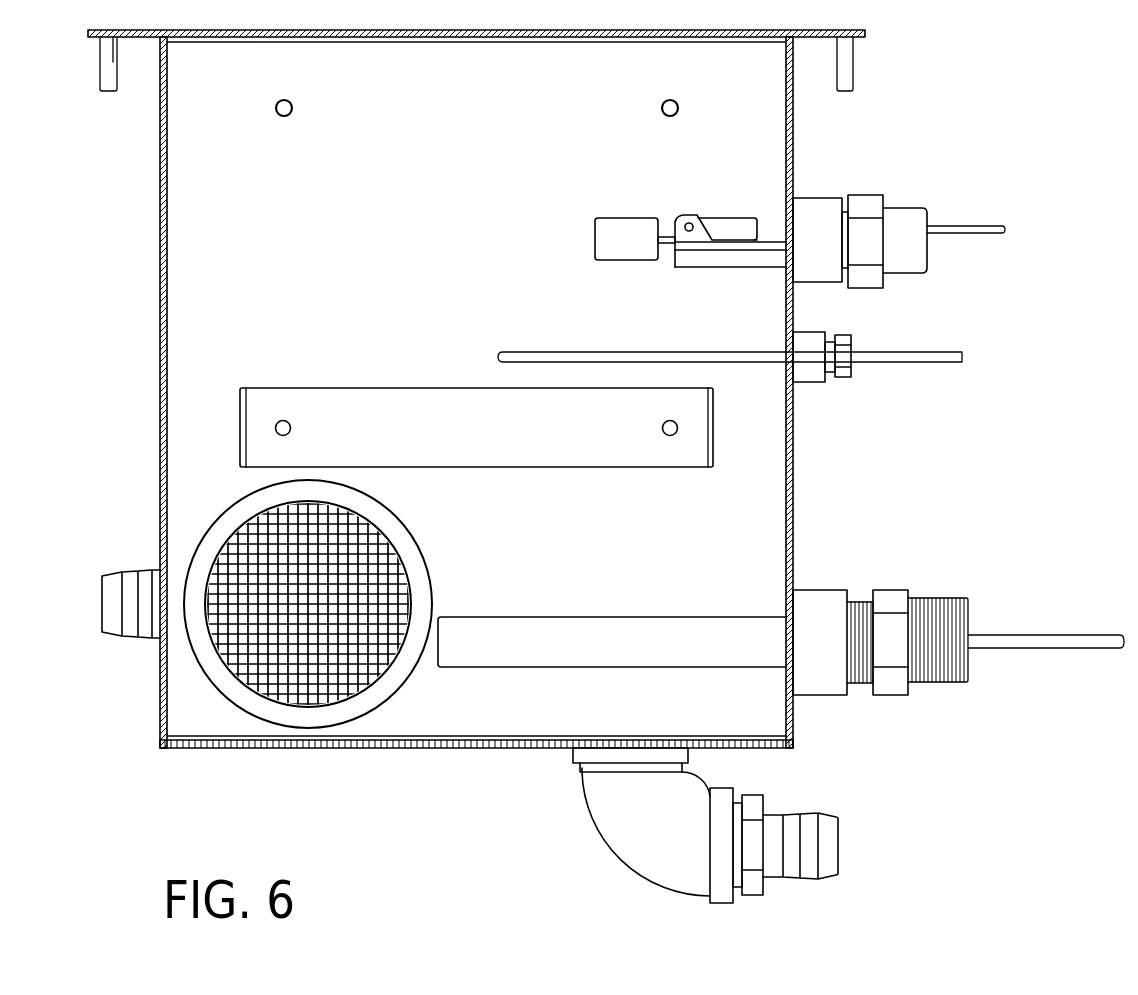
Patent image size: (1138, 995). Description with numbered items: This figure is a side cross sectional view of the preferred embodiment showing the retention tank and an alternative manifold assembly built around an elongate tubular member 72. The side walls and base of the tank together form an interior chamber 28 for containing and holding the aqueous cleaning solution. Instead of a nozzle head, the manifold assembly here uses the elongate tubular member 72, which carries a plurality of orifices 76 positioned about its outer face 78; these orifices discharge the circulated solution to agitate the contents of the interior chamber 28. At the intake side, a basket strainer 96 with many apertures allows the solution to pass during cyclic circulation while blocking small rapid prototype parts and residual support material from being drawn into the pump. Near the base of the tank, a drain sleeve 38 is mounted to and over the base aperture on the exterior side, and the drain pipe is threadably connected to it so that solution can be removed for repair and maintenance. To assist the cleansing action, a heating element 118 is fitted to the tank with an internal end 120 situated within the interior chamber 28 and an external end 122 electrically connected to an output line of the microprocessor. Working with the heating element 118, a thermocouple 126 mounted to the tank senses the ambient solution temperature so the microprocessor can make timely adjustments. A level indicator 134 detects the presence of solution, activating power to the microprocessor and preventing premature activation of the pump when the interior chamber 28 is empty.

The interior chamber 28 is at (413, 262).
The drain sleeve 38 is at (602, 840).
The elongate tubular member 72 is at (348, 388).
The orifices 76 is at (283, 420).
The outer face 78 is at (480, 441).
The basket strainer 96 is at (213, 650).
The heating element 118 is at (830, 590).
The internal end 120 is at (527, 667).
The external end 122 is at (1062, 633).
The thermocouple 126 is at (895, 362).
The level indicator 134 is at (866, 196).